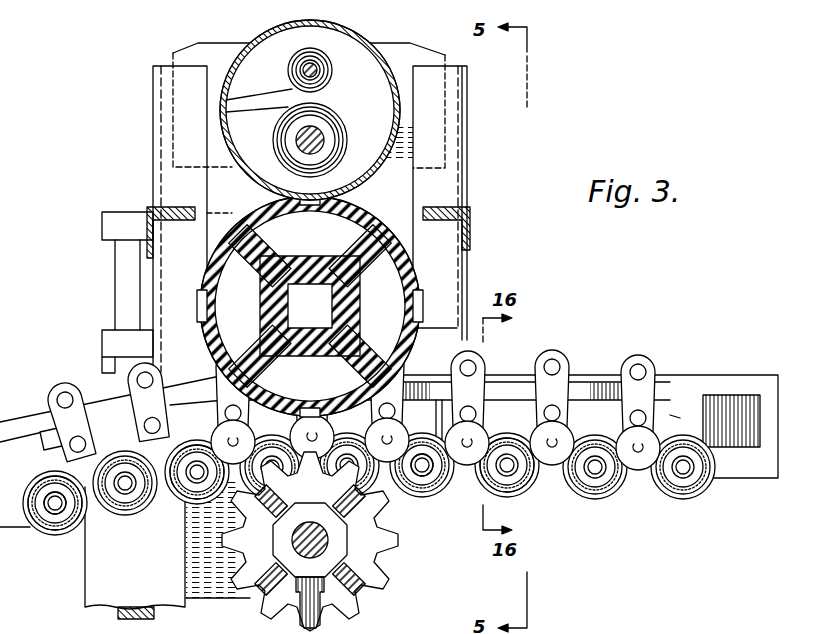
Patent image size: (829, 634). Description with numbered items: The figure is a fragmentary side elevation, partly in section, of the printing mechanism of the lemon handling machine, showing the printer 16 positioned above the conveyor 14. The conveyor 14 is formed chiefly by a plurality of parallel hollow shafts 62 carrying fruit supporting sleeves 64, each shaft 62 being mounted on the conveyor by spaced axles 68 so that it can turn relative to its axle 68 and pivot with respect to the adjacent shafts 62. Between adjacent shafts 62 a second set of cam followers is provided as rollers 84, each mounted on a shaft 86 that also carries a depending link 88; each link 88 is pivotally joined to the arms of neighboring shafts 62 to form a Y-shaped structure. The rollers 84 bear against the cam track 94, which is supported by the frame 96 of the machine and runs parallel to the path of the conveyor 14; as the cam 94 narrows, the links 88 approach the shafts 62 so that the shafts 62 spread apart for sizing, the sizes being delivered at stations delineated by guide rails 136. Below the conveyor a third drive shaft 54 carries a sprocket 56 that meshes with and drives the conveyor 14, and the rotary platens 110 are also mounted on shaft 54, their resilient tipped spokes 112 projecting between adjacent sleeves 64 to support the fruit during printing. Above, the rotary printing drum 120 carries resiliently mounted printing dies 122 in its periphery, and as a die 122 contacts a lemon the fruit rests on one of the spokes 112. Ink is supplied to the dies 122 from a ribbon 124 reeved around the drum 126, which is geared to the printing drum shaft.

The conveyor 14 is at (668, 417).
The printer 16 is at (137, 175).
The third drive shaft 54 is at (270, 590).
The sprocket 56 is at (345, 615).
The hollow shaft 62 is at (55, 530).
The sleeve 64 is at (125, 515).
The axle 68 is at (50, 508).
The roller 84 is at (130, 385).
The shaft 86 is at (62, 397).
The link 88 is at (45, 405).
The cam track 94 is at (735, 395).
The frame 96 is at (765, 478).
The rotary platen 110 is at (330, 540).
The resilient tipped spoke 112 is at (250, 585).
The rotary printing drum 120 is at (408, 234).
The printing die 122 is at (300, 200).
The ribbon 124 is at (402, 107).
The drum 126 is at (363, 46).
The guide rail 136 is at (497, 392).